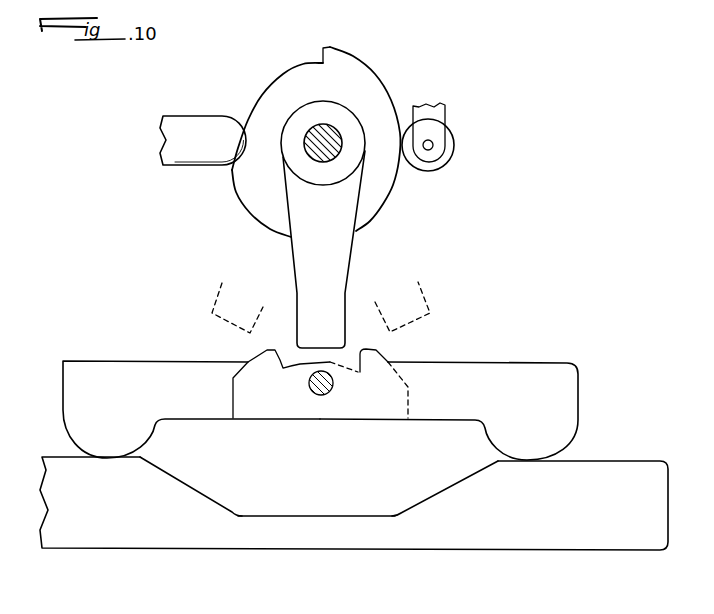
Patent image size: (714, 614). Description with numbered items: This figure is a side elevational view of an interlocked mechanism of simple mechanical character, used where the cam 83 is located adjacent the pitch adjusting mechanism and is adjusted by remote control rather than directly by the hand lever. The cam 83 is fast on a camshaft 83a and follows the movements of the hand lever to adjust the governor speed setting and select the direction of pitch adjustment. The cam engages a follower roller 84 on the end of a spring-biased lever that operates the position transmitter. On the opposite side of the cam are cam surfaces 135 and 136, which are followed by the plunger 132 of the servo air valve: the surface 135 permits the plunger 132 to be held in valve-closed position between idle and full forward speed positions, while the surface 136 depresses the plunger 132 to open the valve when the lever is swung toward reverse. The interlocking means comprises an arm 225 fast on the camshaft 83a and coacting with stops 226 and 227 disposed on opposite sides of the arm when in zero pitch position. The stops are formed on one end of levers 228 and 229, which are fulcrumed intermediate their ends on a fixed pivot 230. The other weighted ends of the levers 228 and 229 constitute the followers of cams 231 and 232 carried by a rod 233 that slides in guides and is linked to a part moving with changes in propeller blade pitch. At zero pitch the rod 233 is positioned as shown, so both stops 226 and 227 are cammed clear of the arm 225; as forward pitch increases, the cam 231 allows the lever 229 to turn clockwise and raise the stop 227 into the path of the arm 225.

The cam 83 is at (393, 190).
The camshaft 83a is at (318, 162).
The follower roller 84 is at (455, 162).
The plunger 132 is at (207, 125).
The cam surface 135 is at (277, 80).
The cam surface 136 is at (252, 216).
The arm 225 is at (345, 268).
The stop 226 is at (362, 351).
The stop 227 is at (279, 351).
The lever 228 is at (165, 368).
The lever 229 is at (490, 368).
The fixed pivot 230 is at (320, 390).
The cam 231 is at (461, 482).
The cam 232 is at (201, 493).
The rod 233 is at (168, 541).